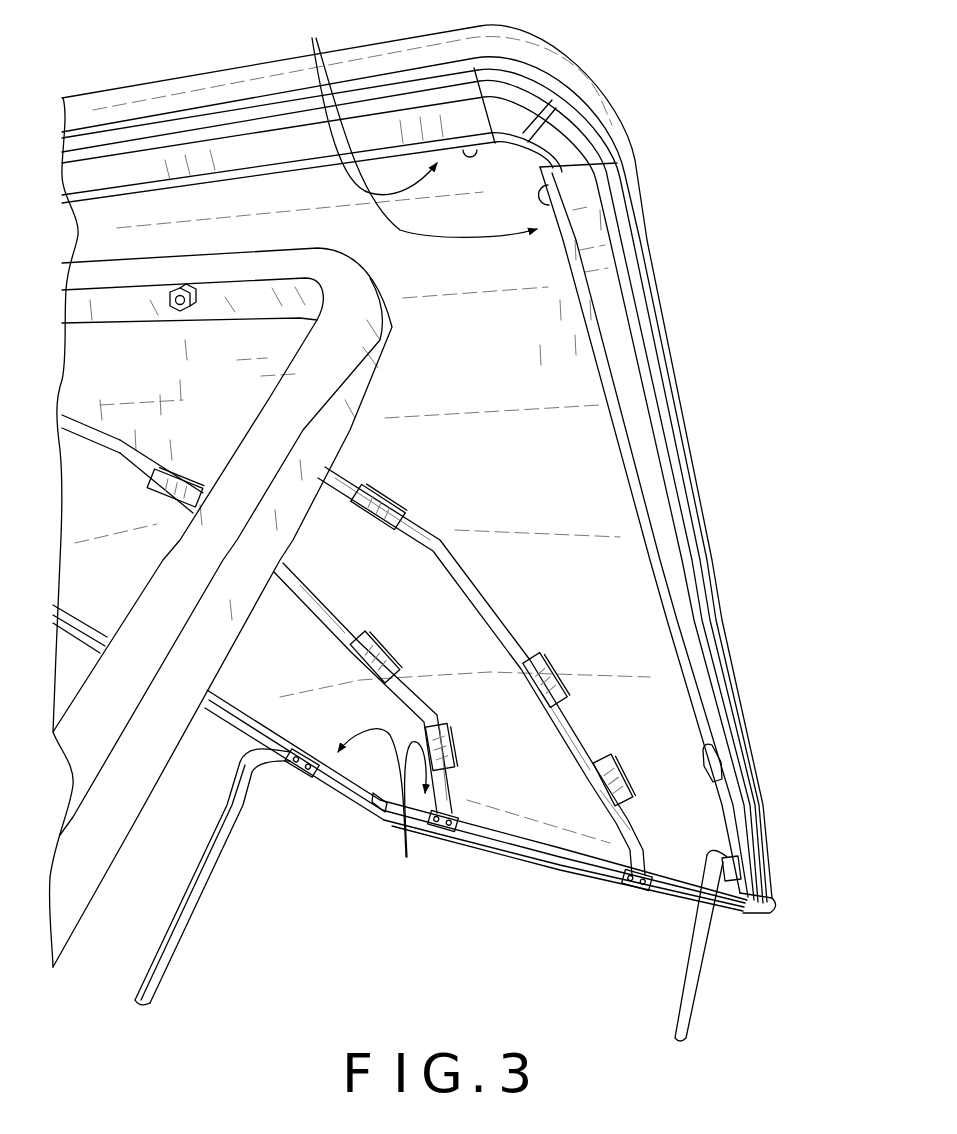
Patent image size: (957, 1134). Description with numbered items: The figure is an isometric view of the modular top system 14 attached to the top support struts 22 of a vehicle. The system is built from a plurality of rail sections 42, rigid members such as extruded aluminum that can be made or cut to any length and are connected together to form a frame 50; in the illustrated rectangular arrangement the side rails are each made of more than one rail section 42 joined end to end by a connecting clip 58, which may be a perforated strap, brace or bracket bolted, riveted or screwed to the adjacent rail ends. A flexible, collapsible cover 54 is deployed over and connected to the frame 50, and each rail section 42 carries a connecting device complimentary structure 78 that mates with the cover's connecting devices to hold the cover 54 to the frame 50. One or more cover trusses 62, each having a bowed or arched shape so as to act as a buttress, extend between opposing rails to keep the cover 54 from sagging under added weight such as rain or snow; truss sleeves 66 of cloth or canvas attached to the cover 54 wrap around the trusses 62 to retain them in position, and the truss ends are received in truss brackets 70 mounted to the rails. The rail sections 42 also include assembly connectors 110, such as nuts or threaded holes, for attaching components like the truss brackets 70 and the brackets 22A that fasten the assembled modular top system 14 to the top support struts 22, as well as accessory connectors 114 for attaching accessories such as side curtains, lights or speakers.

The modular top system 14 is at (680, 180).
The top support struts 22 is at (140, 780).
The brackets 22A is at (300, 767).
The rail sections 42 is at (157, 163).
The frame 50 is at (416, 446).
The cover 54 is at (516, 343).
The connecting clip 58 is at (710, 763).
The cover truss 62 is at (448, 573).
The truss sleeve 66 is at (177, 487).
The truss brackets 70 is at (438, 830).
The connecting device complimentary structure 78 is at (180, 112).
The assembly connector 110 is at (490, 845).
The accessory connector 114 is at (688, 540).